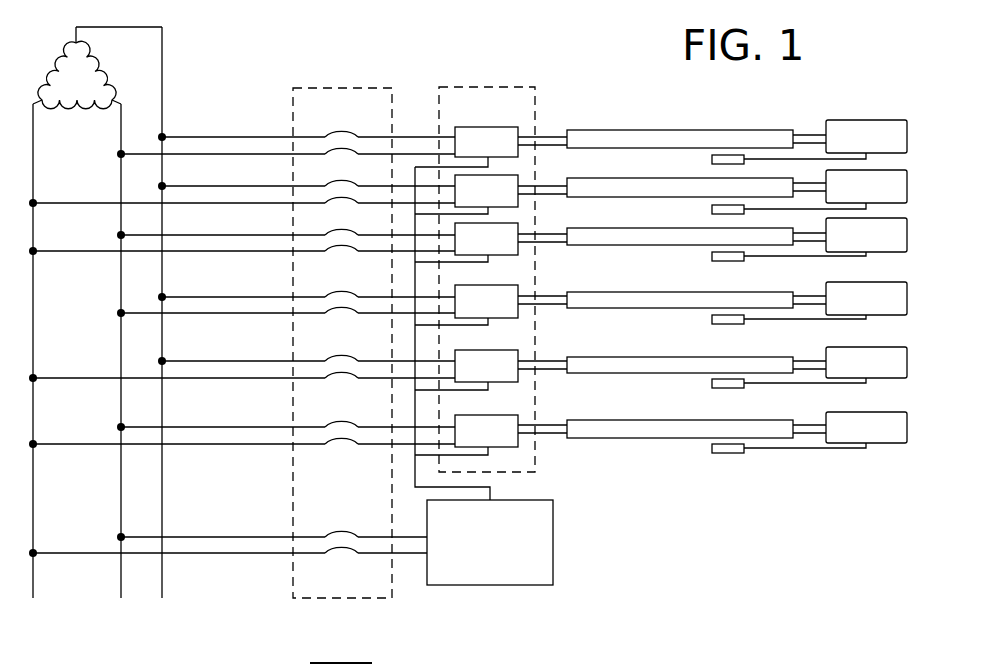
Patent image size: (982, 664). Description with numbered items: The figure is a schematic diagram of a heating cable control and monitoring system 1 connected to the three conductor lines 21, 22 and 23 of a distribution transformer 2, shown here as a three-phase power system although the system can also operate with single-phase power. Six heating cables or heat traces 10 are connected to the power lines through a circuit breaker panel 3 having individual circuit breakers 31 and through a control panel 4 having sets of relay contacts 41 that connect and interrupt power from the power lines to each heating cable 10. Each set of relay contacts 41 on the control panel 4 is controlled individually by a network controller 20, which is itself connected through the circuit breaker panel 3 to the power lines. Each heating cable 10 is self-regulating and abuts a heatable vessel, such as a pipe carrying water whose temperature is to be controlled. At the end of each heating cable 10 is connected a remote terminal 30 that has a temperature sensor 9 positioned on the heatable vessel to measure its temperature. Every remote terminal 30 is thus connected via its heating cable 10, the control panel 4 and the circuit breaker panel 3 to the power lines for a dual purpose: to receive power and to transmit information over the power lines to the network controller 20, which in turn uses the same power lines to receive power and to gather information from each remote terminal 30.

The system 1 is at (120, 306).
The distribution transformer 2 is at (50, 86).
The circuit breaker panel 3 is at (342, 304).
The control panel 4 is at (475, 241).
The temperature sensor 9 is at (712, 158).
The heating cable 10 is at (688, 130).
The network controller 20 is at (484, 404).
The conductor line 21 is at (162, 113).
The conductor line 22 is at (120, 216).
The conductor line 23 is at (33, 153).
The remote terminal 30 is at (863, 111).
The circuit breaker 31 is at (336, 122).
The relay contacts 41 is at (486, 142).